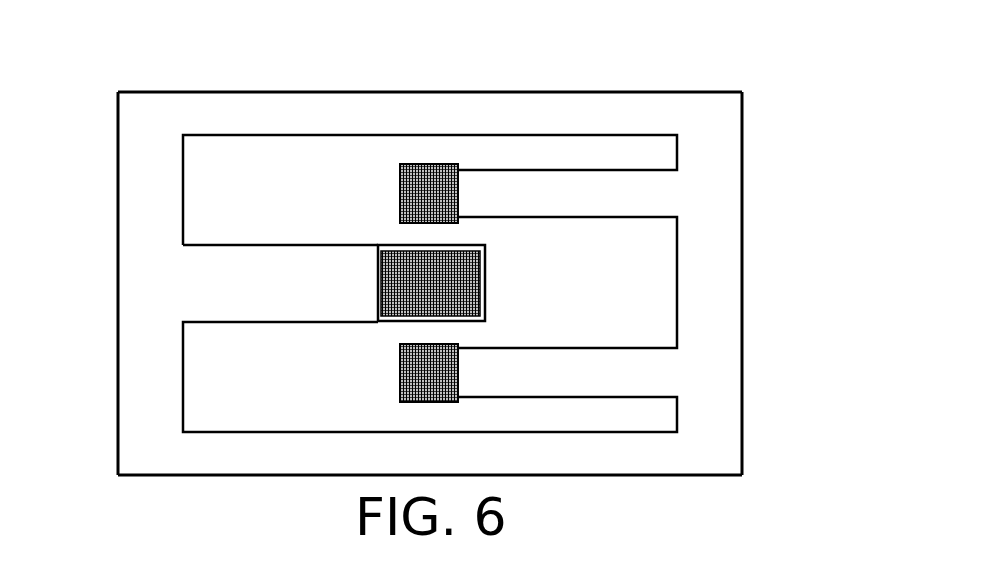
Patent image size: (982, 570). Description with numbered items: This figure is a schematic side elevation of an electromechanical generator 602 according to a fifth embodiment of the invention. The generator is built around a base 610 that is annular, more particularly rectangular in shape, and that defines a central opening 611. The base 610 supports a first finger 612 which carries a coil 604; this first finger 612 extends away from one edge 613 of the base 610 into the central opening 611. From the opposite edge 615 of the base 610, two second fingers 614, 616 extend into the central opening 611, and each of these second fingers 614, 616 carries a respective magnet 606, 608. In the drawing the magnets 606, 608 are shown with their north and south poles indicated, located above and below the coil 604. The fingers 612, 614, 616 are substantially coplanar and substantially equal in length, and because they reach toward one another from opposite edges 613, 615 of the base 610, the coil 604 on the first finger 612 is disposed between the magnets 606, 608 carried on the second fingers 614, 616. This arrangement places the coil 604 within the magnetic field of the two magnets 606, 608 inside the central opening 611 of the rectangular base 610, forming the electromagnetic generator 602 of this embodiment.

The magnetic circuit assembly 602 is at (672, 80).
The coil 604 is at (485, 283).
The magnet 606 is at (400, 193).
The magnet 608 is at (400, 374).
The base 610 is at (730, 137).
The central opening 611 is at (663, 283).
The first finger 612 is at (244, 310).
The edge 613 is at (132, 142).
The second finger 614 is at (618, 208).
The opposite edge 615 is at (742, 457).
The second finger 616 is at (618, 358).